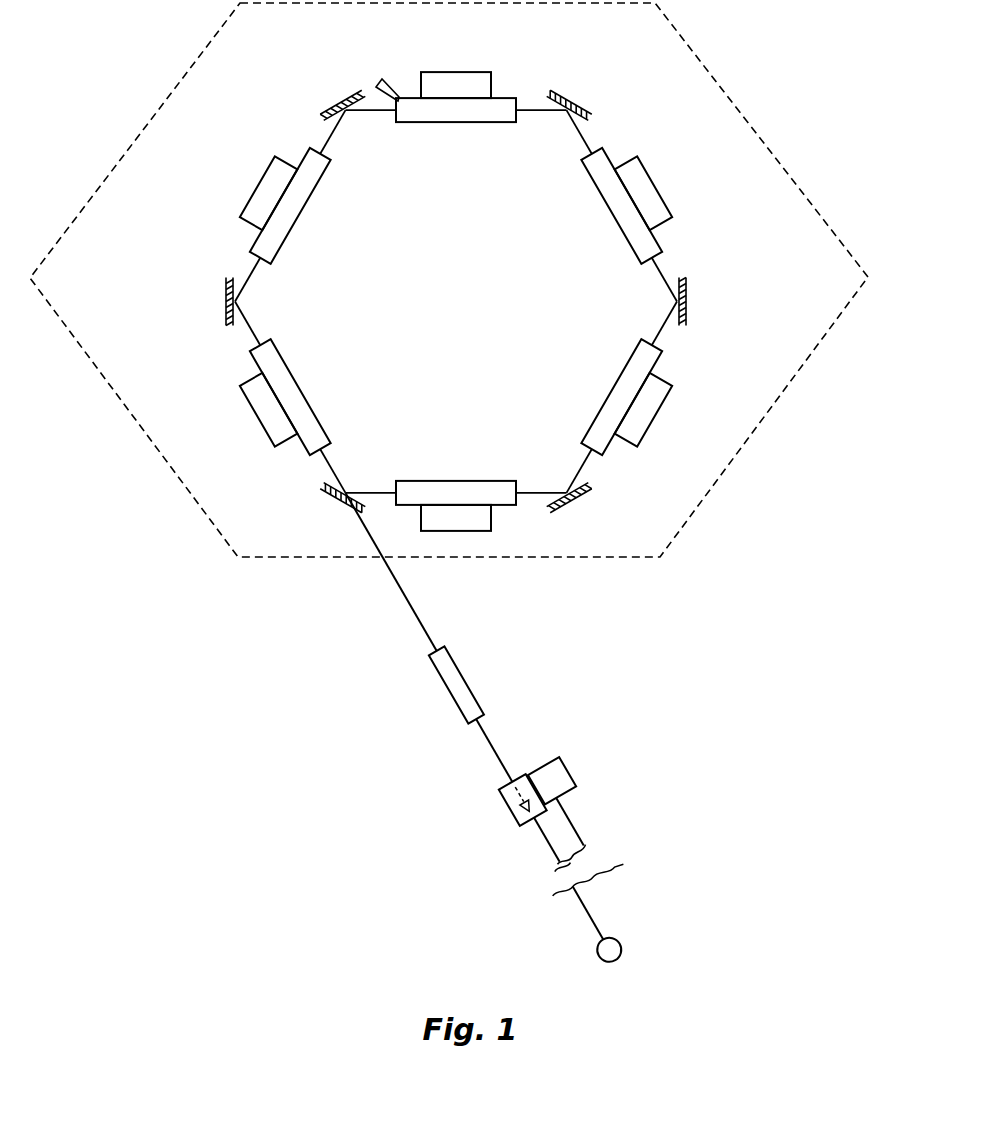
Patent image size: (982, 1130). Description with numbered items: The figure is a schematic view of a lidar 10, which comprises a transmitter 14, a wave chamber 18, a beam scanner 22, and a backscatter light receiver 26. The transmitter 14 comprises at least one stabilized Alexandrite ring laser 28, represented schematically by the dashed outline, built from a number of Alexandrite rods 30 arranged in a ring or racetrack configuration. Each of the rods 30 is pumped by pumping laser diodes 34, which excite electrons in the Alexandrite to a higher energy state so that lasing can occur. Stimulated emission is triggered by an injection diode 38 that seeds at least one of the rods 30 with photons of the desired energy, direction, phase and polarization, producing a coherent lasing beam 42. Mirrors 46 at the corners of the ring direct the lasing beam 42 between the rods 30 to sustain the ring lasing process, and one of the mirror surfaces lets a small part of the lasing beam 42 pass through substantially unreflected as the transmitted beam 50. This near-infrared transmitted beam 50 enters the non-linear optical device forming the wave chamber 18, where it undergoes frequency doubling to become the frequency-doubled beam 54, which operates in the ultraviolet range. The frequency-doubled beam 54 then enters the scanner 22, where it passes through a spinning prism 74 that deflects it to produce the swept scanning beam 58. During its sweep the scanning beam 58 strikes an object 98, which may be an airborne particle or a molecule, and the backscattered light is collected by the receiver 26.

The lidar 10 is at (281, 763).
The transmitter 14 is at (217, 618).
The wave chamber 18 is at (470, 688).
The beam scanner 22 is at (506, 800).
The backscatter light receiver 26 is at (570, 775).
The stabilized Alexandrite ring laser 28 is at (192, 493).
The Alexandrite rods 30 is at (448, 118).
The pumping laser diodes 34 is at (462, 82).
The injection diode 38 is at (384, 80).
The lasing beam 42 is at (388, 112).
The mirrors 46 is at (226, 298).
The transmitted beam 50 is at (400, 590).
The frequency-doubled beam 54 is at (490, 750).
The scanning beam 58 is at (543, 866).
The spinning prism 74 is at (541, 818).
The object 98 is at (625, 950).